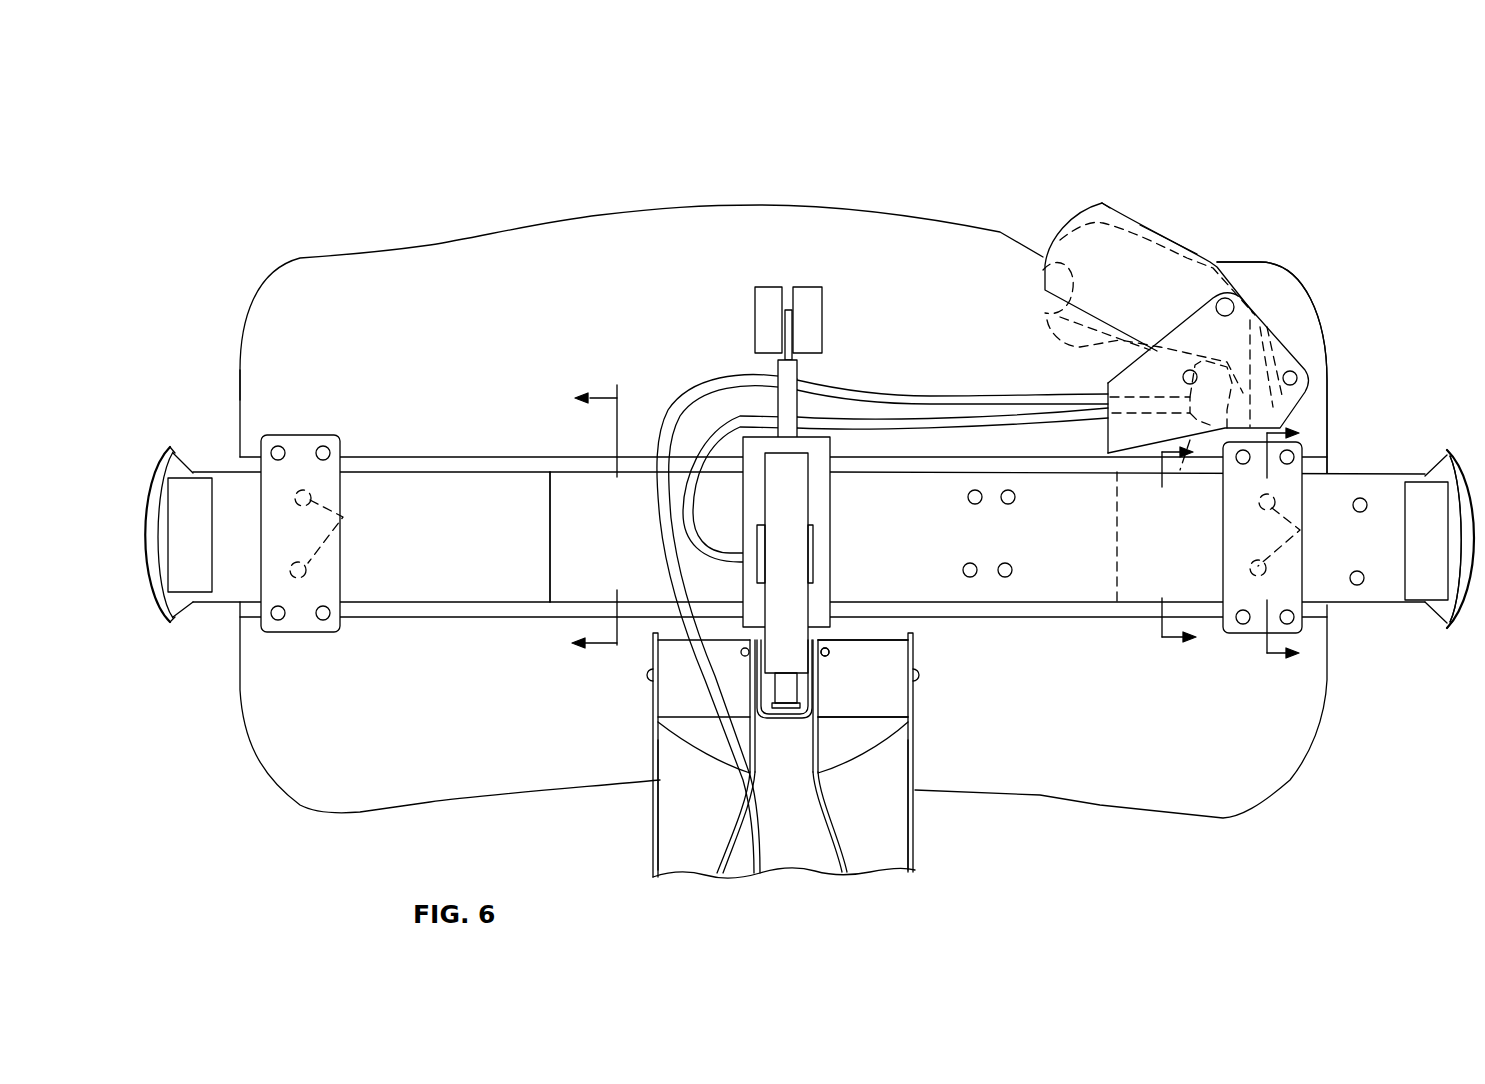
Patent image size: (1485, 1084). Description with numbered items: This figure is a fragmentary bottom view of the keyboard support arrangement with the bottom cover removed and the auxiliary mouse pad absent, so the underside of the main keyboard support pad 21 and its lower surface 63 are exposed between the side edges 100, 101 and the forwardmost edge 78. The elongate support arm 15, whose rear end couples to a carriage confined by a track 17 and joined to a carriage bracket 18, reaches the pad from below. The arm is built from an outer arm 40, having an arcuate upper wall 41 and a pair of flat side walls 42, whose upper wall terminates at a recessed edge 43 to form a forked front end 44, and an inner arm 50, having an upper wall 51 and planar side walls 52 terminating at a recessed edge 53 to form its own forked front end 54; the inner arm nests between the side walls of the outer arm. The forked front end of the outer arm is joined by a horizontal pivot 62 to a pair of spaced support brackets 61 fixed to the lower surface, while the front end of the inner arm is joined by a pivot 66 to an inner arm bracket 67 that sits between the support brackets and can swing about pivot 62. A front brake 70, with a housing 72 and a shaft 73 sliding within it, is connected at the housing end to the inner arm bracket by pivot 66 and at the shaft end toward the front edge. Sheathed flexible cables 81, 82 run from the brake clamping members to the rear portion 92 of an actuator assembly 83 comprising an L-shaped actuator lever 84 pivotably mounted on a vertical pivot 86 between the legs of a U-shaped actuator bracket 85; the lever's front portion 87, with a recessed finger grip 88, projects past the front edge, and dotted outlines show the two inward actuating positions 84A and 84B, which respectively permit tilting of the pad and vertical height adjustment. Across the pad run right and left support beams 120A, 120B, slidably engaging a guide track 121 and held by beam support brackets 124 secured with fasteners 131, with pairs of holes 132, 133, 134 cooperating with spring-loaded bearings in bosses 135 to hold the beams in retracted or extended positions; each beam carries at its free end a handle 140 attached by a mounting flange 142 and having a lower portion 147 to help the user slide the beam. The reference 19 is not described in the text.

The support arm 15 is at (922, 820).
The track 17 is at (613, 524).
The carriage bracket 18 is at (1189, 549).
The section line 19 is at (1297, 544).
The main keyboard support pad 21 is at (432, 242).
The outer arm 40 is at (652, 825).
The upper wall 41 is at (705, 846).
The side walls 42 is at (655, 765).
The edge 43 is at (695, 745).
The forked front end 44 is at (935, 700).
The inner arm 50 is at (838, 828).
The upper wall 51 is at (810, 828).
The side walls 52 is at (740, 830).
The edge 53 is at (810, 704).
The forked front end 54 is at (835, 675).
The support brackets 61 is at (700, 713).
The pivot 62 is at (923, 678).
The lower surface 63 is at (625, 324).
The pivot 66 is at (742, 652).
The inner arm bracket 67 is at (771, 718).
The front brake 70 is at (815, 470).
The housing 72 is at (803, 508).
The shaft 73 is at (797, 374).
The forwardmost edge 78 is at (788, 208).
The flexible cable 81 is at (1030, 420).
The flexible cable 82 is at (908, 398).
The actuator assembly 83 is at (1226, 243).
The actuator lever 84 is at (1066, 212).
The actuating position 84A is at (1045, 272).
The actuating position 84B is at (1060, 345).
The actuator bracket 85 is at (1288, 362).
The pivot 86 is at (1230, 300).
The front portion 87 is at (1104, 203).
The finger grip 88 is at (1150, 236).
The rear portion 92 is at (1181, 470).
The side edge 100 is at (1320, 404).
The side edge 101 is at (240, 372).
The support beam 120A is at (1140, 588).
The support beam 120B is at (513, 500).
The guide track 121 is at (466, 466).
The beam support bracket 124 is at (752, 445).
The fasteners 131 is at (278, 453).
The holes 132 is at (1362, 498).
The holes 133 is at (963, 564).
The holes 134 is at (1010, 564).
The bosses 135 is at (343, 515).
The handle 140 is at (170, 633).
The mounting flange 142 is at (1425, 470).
The lower portion 147 is at (1468, 440).